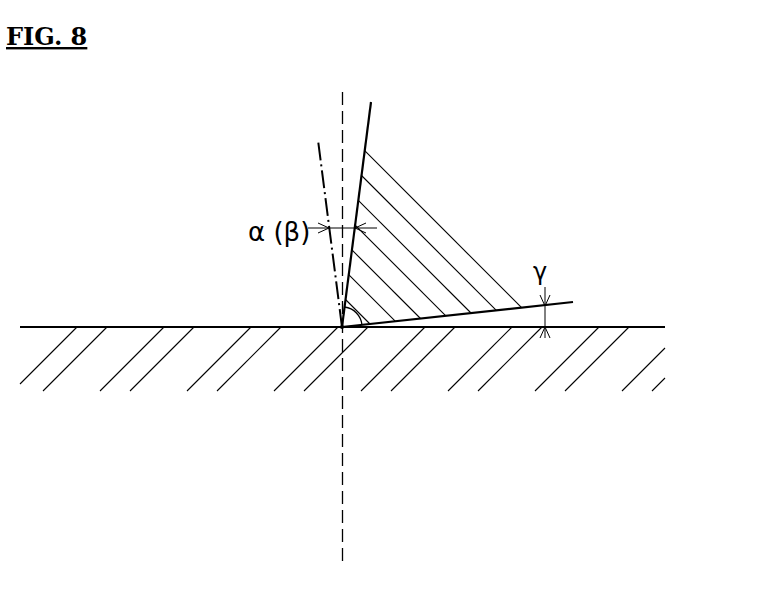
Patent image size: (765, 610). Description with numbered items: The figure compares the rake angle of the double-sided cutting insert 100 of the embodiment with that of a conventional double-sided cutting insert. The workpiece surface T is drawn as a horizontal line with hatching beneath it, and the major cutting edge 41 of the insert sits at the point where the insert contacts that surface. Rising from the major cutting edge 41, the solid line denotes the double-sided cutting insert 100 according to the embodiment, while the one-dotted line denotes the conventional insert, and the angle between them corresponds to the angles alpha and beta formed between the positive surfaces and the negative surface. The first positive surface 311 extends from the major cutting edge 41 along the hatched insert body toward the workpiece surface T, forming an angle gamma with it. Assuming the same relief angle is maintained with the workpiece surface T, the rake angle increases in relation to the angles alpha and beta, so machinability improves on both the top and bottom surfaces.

The double-sided cutting insert 100 is at (498, 170).
The first positive surface 311 is at (568, 301).
The major cutting edge 41 is at (341, 329).
The workpiece surface T is at (70, 342).